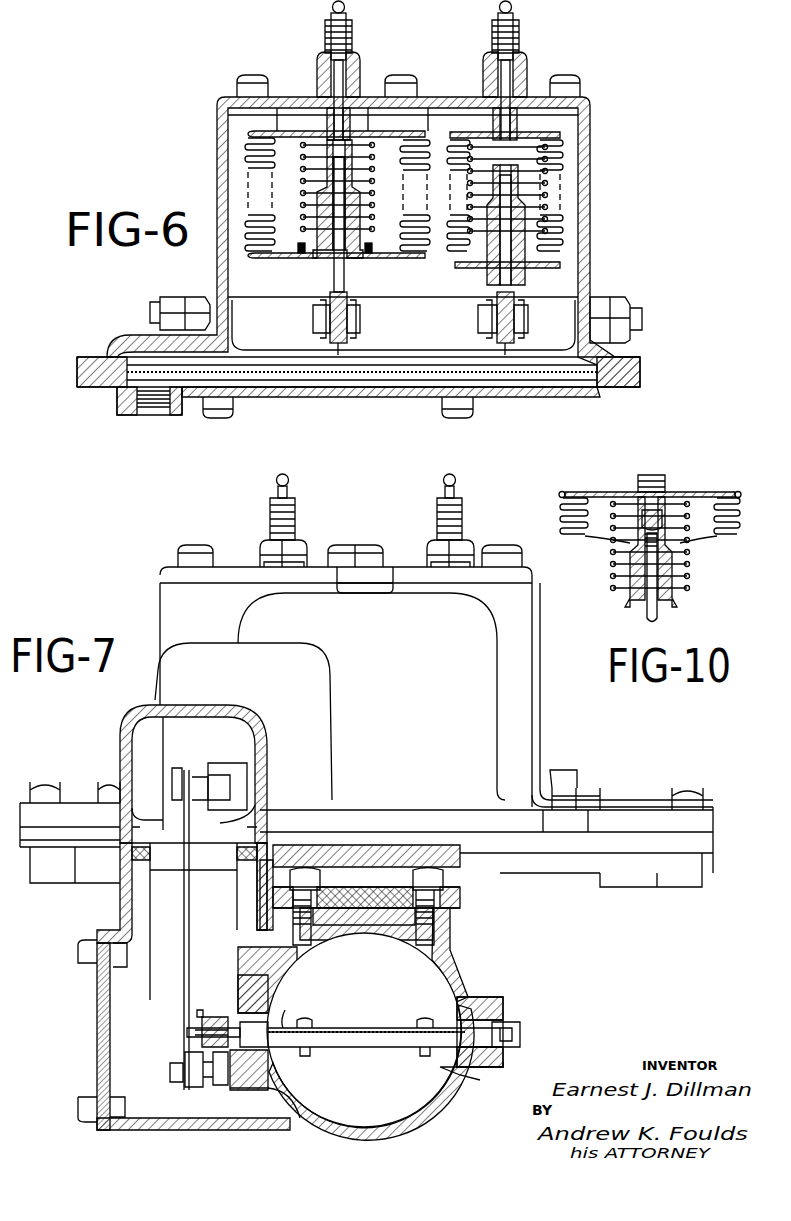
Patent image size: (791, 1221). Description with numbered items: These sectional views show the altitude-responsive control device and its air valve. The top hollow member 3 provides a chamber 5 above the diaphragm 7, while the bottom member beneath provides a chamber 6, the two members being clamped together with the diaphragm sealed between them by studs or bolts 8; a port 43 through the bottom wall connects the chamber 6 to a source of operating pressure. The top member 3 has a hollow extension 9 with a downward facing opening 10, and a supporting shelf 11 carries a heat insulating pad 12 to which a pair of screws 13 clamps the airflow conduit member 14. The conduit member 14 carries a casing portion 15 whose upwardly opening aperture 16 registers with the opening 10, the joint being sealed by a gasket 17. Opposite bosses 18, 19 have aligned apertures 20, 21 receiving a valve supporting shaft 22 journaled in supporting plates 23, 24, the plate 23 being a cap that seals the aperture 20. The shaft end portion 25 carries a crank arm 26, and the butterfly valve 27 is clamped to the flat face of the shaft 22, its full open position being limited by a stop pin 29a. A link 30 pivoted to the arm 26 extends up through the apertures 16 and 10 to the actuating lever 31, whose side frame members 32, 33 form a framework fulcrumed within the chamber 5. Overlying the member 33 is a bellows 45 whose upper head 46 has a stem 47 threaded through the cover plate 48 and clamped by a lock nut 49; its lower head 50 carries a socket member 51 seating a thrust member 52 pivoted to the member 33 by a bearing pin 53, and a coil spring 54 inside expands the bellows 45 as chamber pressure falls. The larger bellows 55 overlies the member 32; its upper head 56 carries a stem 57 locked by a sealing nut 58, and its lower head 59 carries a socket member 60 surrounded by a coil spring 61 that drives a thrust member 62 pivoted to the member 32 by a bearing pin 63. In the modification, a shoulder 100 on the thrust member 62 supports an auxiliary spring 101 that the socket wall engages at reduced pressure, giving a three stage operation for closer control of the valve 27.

In FIG. 6, the top hollow member 3 is at (585, 222).
In FIG. 7, the top hollow member 3 is at (535, 660).
In FIG. 6, the chamber 5 is at (393, 292).
In FIG. 6, the chamber 6 is at (329, 390).
In FIG. 6, the diaphragm 7 is at (525, 378).
In FIG. 6, the studs or bolts 8 is at (577, 86).
In FIG. 7, the hollow extension 9 is at (120, 737).
In FIG. 7, the downward facing opening 10 is at (178, 870).
In FIG. 7, the supporting shelf 11 is at (395, 855).
In FIG. 7, the heat insulating pad 12 is at (462, 902).
In FIG. 7, the screws 13 is at (322, 883).
In FIG. 7, the airflow conduit member 14 is at (452, 977).
In FIG. 7, the casing portion 15 is at (118, 910).
In FIG. 7, the upwardly opening aperture 16 is at (222, 868).
In FIG. 7, the gasket 17 is at (150, 850).
In FIG. 7, the shaft receiving boss 18 is at (478, 997).
In FIG. 7, the shaft receiving boss 19 is at (248, 973).
In FIG. 7, the shaft aperture 20 is at (484, 1068).
In FIG. 7, the shaft aperture 21 is at (268, 1062).
In FIG. 7, the valve supporting shaft 22 is at (357, 1048).
In FIG. 7, the supporting plate 23 is at (512, 1022).
In FIG. 7, the supporting plate 24 is at (224, 995).
In FIG. 7, the shaft end portion 25 is at (215, 1016).
In FIG. 7, the crank arm 26 is at (185, 1052).
In FIG. 7, the air flow controlling valve 27 is at (372, 1027).
In FIG. 7, the stop pin 29a is at (288, 1012).
In FIG. 7, the link 30 is at (183, 935).
In FIG. 7, the actuating lever 31 is at (223, 763).
In FIG. 6, the side frame member 32 is at (328, 337).
In FIG. 6, the side frame member 33 is at (515, 340).
In FIG. 6, the port 43 is at (162, 414).
In FIG. 6, the bellows 45 is at (562, 170).
In FIG. 6, the bellows upper head 46 is at (562, 133).
In FIG. 6, the supporting stem 47 is at (516, 48).
In FIG. 7, the supporting stem 47 is at (465, 508).
In FIG. 6, the cover plate 48 is at (444, 100).
In FIG. 7, the cover plate 48 is at (402, 565).
In FIG. 6, the lock nut 49 is at (528, 74).
In FIG. 7, the lock nut 49 is at (475, 540).
In FIG. 6, the lower bellows head 50 is at (542, 272).
In FIG. 6, the guide and socket member 51 is at (522, 228).
In FIG. 6, the thrust member 52 is at (520, 206).
In FIG. 6, the bearing pin 53 is at (477, 322).
In FIG. 6, the helical coil spring 54 is at (452, 245).
In FIG. 6, the bellows 55 is at (248, 168).
In FIG. 10, the bellows 55 is at (740, 522).
In FIG. 6, the bellows upper head 56 is at (283, 138).
In FIG. 10, the bellows upper head 56 is at (700, 490).
In FIG. 6, the supporting stem 57 is at (346, 40).
In FIG. 7, the supporting stem 57 is at (270, 510).
In FIG. 6, the sealing and lock nut 58 is at (316, 64).
In FIG. 7, the sealing and lock nut 58 is at (260, 547).
In FIG. 6, the lower bellows head 59 is at (275, 262).
In FIG. 6, the socket member 60 is at (312, 214).
In FIG. 10, the socket member 60 is at (632, 598).
In FIG. 6, the helical coil spring 61 is at (303, 181).
In FIG. 10, the helical coil spring 61 is at (687, 590).
In FIG. 6, the thrust member 62 is at (333, 277).
In FIG. 10, the thrust member 62 is at (647, 615).
In FIG. 6, the bearing pin 63 is at (312, 322).
In FIG. 10, the shoulder 100 is at (642, 572).
In FIG. 10, the helical coil compression spring 101 is at (628, 548).